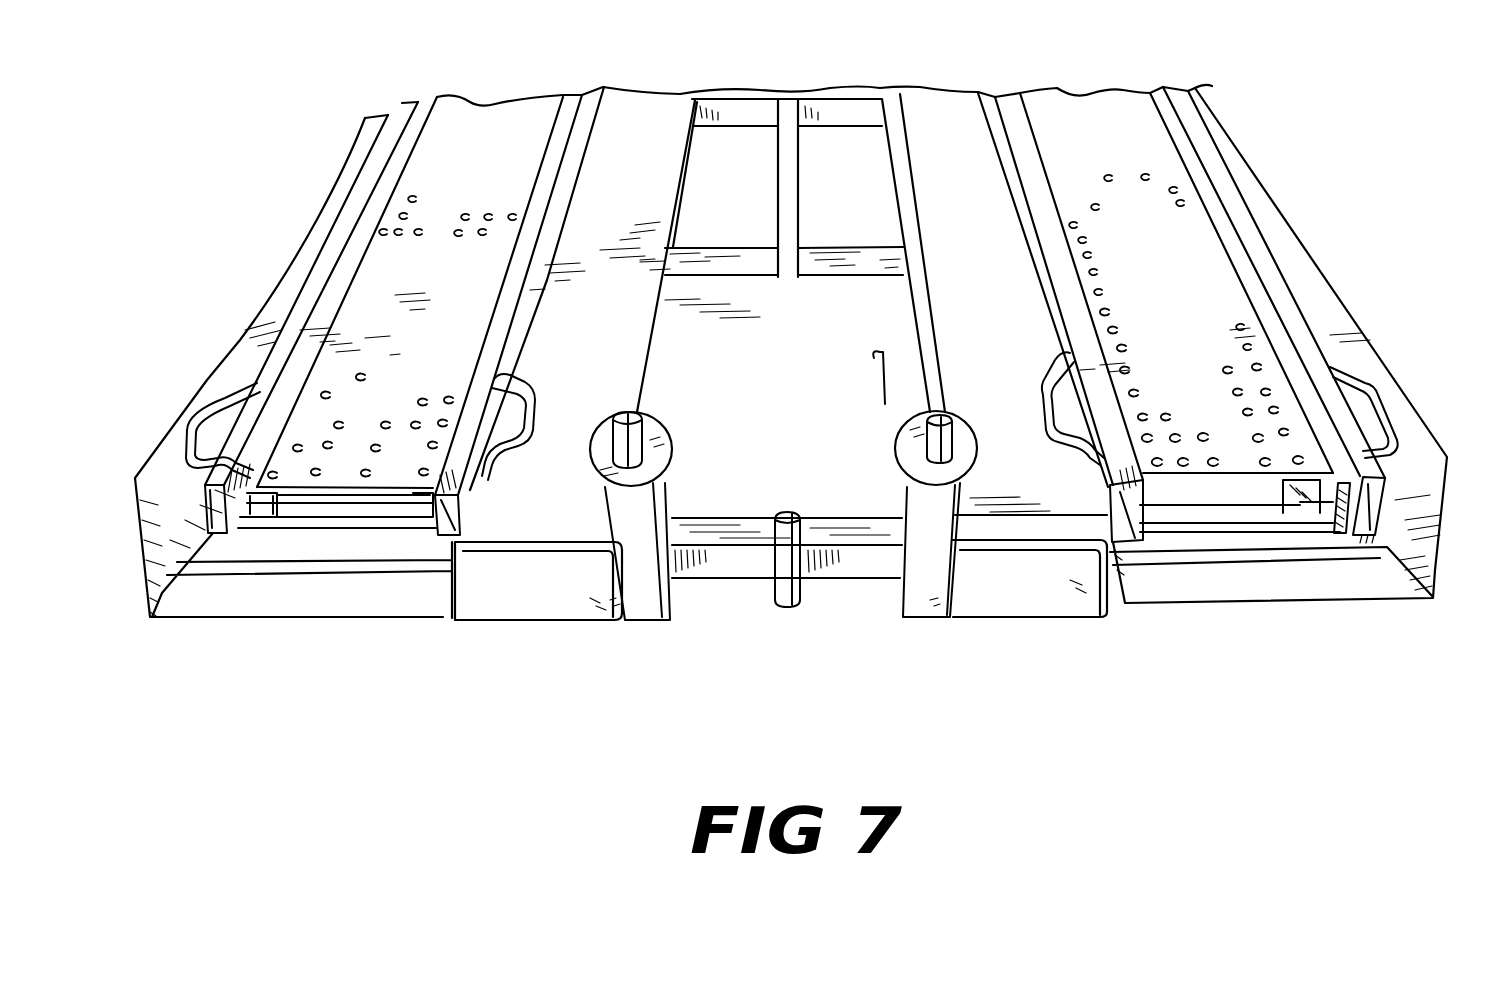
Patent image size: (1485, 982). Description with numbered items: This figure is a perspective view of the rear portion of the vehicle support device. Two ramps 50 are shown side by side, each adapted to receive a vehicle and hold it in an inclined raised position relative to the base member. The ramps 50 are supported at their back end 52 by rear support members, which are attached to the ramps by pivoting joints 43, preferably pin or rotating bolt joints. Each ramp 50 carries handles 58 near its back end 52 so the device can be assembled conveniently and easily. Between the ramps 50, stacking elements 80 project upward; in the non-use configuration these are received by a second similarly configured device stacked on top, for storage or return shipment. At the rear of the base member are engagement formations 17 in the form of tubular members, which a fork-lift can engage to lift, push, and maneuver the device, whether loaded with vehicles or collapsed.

The engagement formations 17 is at (542, 578).
The pivoting joints 43 is at (1333, 540).
The ramps 50 is at (1238, 195).
The back end 52 is at (1292, 273).
The handles 58 is at (1380, 394).
The stacking elements 80 is at (897, 487).